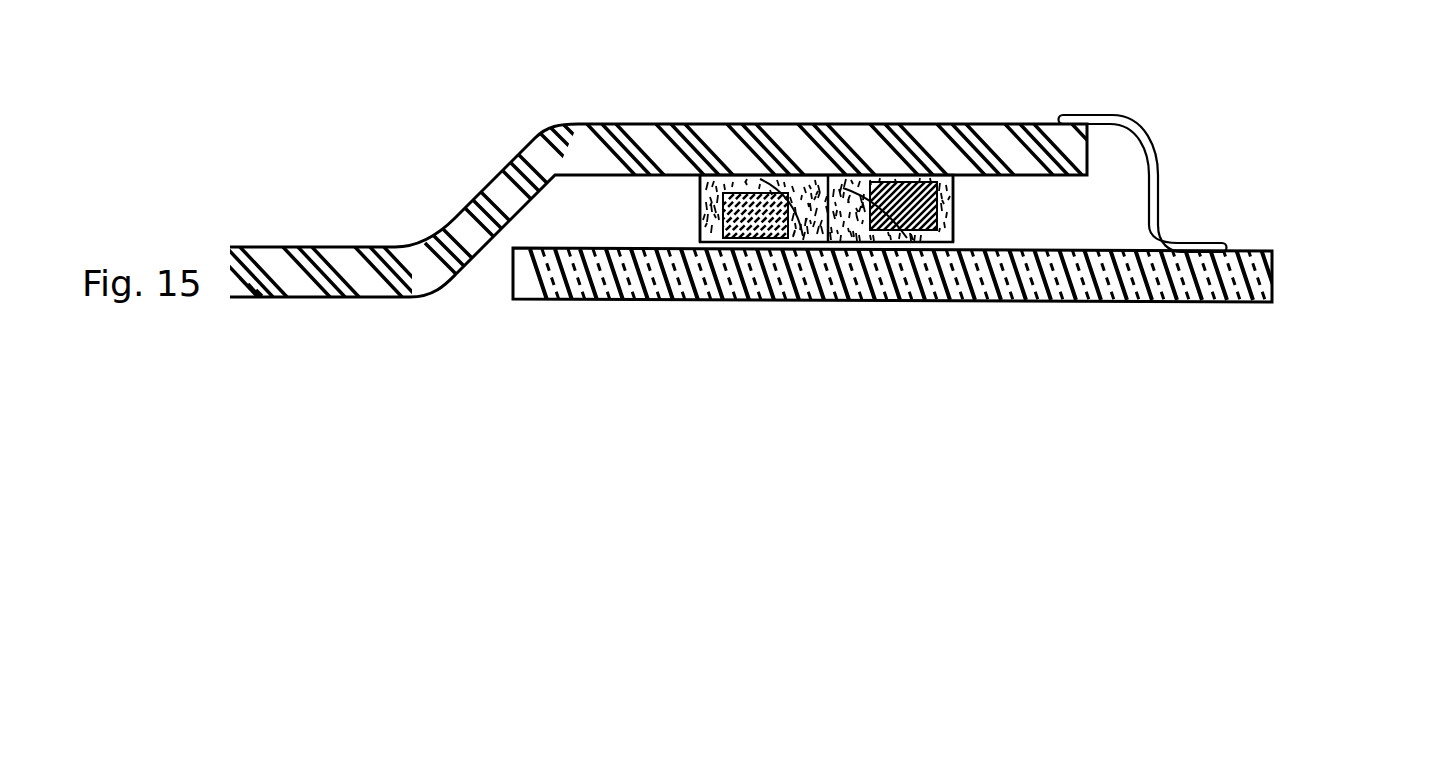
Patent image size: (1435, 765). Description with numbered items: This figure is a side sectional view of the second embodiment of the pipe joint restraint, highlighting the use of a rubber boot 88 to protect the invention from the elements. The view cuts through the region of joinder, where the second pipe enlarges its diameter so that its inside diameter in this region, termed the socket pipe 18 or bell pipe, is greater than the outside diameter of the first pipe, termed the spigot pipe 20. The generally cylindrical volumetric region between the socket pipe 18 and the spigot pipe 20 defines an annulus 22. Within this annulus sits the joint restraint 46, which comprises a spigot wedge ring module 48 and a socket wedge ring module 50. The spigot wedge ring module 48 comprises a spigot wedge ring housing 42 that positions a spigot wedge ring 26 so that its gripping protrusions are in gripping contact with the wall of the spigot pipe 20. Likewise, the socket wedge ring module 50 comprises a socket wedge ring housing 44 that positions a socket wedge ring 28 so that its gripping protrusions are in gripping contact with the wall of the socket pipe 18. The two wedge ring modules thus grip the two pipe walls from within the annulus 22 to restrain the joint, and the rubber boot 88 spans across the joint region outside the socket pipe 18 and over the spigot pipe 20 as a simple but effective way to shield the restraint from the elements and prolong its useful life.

The socket pipe 18 is at (602, 158).
The annulus 22 is at (578, 207).
The spigot pipe 20 is at (590, 288).
The spigot wedge ring 26 is at (747, 232).
The socket wedge ring 28 is at (939, 238).
The spigot wedge ring housing 42 is at (763, 183).
The socket wedge ring housing 44 is at (938, 228).
The joint restraint 46 is at (1316, 203).
The spigot wedge ring module 48 is at (689, 192).
The socket wedge ring module 50 is at (977, 186).
The rubber boot 88 is at (1157, 185).